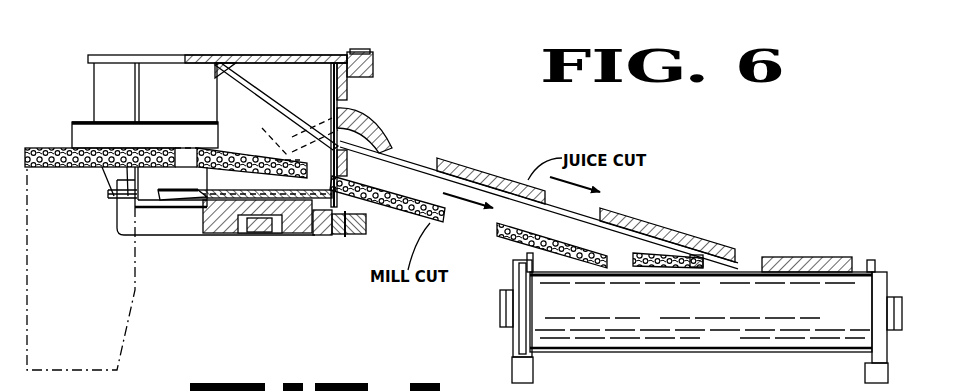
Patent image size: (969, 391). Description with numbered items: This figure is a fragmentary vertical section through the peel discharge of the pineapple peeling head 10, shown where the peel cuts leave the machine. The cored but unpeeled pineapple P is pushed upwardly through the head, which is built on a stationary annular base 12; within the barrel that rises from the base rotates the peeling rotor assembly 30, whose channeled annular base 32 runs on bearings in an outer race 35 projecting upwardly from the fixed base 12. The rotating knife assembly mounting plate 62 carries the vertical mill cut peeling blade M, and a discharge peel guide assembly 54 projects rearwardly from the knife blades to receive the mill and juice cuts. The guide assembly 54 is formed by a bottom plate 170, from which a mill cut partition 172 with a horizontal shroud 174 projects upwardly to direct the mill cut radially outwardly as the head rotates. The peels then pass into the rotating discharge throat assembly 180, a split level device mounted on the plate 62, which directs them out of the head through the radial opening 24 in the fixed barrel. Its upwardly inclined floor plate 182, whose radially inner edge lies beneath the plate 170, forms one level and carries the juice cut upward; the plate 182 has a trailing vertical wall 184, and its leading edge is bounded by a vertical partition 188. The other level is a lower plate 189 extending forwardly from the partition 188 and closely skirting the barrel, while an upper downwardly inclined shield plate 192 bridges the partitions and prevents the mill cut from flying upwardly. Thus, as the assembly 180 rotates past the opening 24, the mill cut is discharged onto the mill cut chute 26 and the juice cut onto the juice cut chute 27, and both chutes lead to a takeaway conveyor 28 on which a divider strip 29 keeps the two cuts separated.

The peeling head 10 is at (388, 66).
The annular base 12 is at (326, 236).
The radial opening 24 is at (347, 90).
The mill cut chute 26 is at (498, 237).
The juice cut chute 27 is at (600, 220).
The takeaway conveyor 28 is at (643, 316).
The divider strip 29 is at (672, 284).
The peeling rotor assembly 30 is at (292, 236).
The channeled annular base 32 is at (210, 237).
The outer race 35 is at (270, 235).
The discharge peel guide assembly 54 is at (110, 120).
The knife assembly mounting plate 62 is at (208, 203).
The bottom plate 170 is at (90, 172).
The mill cut partition 172 is at (72, 133).
The horizontal shroud 174 is at (160, 120).
The rotating discharge throat assembly 180 is at (347, 113).
The upwardly inclined floor plate 182 is at (280, 139).
The trailing vertical wall 184 is at (153, 70).
The vertical partition 188 is at (280, 70).
The lower plate 189 is at (336, 165).
The shield plate 192 is at (240, 58).
The mill cut peeling blade M is at (75, 172).
The pineapple P is at (135, 289).